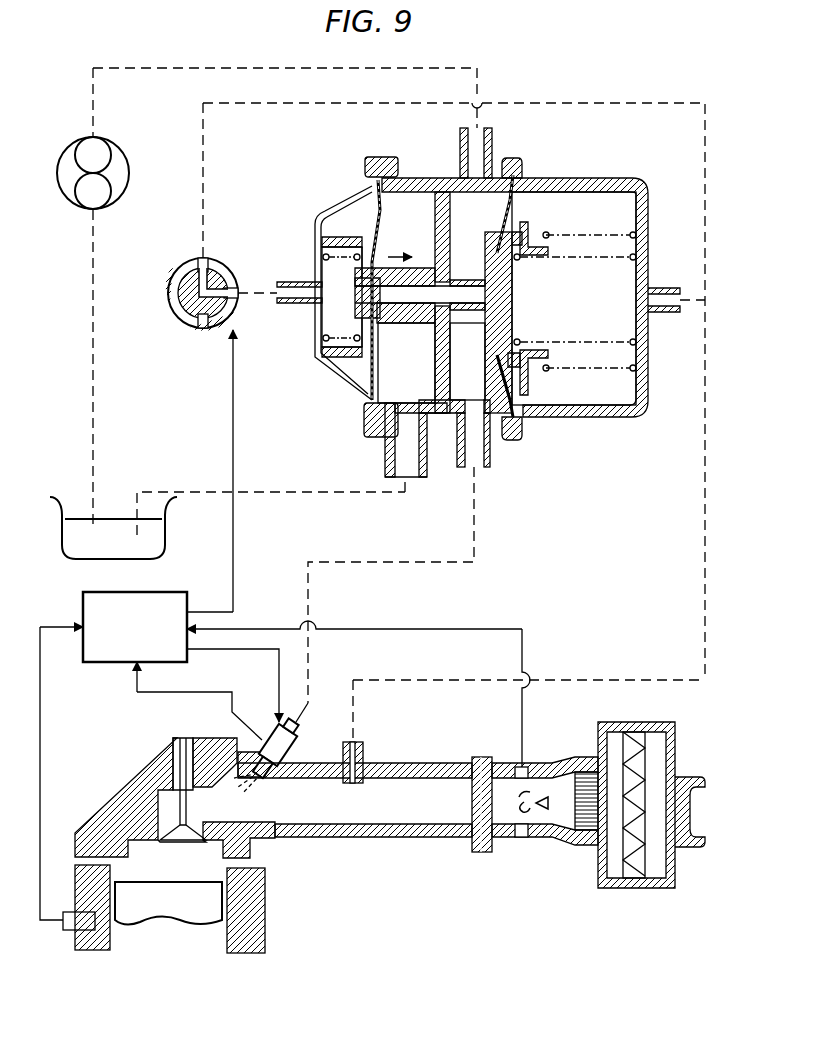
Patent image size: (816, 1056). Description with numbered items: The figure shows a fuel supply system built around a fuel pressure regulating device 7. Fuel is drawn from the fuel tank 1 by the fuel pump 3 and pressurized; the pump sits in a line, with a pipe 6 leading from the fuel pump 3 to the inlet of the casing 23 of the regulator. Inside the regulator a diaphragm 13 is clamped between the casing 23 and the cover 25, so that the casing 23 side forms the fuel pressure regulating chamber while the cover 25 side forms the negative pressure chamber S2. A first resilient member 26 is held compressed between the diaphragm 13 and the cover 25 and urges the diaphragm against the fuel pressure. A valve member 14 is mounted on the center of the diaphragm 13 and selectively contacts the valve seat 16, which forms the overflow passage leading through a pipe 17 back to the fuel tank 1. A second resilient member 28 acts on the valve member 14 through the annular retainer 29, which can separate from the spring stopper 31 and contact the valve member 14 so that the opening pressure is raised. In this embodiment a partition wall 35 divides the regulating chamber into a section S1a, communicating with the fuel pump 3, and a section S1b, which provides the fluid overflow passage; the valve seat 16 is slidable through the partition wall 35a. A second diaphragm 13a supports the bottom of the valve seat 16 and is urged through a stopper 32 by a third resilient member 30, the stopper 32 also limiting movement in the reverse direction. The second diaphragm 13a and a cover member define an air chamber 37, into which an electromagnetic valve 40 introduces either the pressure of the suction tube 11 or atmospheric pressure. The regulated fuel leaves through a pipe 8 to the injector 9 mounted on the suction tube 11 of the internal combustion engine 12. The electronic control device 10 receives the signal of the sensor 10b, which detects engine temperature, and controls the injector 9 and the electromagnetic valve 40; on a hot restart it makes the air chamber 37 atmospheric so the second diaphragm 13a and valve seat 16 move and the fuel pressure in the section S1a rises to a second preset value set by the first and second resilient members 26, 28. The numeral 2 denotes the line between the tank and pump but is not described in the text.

The fuel tank 1 is at (62, 532).
The fuel line 2 is at (90, 312).
The fuel pump 3 is at (66, 152).
The pipe 6 is at (84, 68).
The fuel pressure regulating device 7 is at (536, 186).
The pipe 8 is at (308, 596).
The injector 9 is at (290, 754).
The electronic control device 10 is at (82, 610).
The sensor 10b is at (262, 733).
The suction tube 11 is at (333, 808).
The internal combustion engine 12 is at (130, 812).
The diaphragm 13 is at (494, 224).
The second diaphragm 13a is at (370, 234).
The valve member 14 is at (494, 248).
The valve seat 16 is at (478, 352).
The pipe 17 is at (350, 492).
The casing 23 is at (335, 384).
The cover 25 is at (642, 202).
The first resilient member 26 is at (638, 339).
The second resilient member 28 is at (638, 376).
The annular retainer 29 is at (593, 372).
The third resilient member 30 is at (318, 274).
The spring stopper 31 is at (535, 412).
The stopper 32 is at (342, 240).
The partition wall 35 is at (439, 430).
The partition wall 35a is at (452, 360).
The air chamber 37 is at (345, 316).
The electromagnetic valve 40 is at (176, 272).
The section S1a is at (478, 397).
The section S1b is at (372, 410).
The negative pressure chamber S2 is at (625, 272).